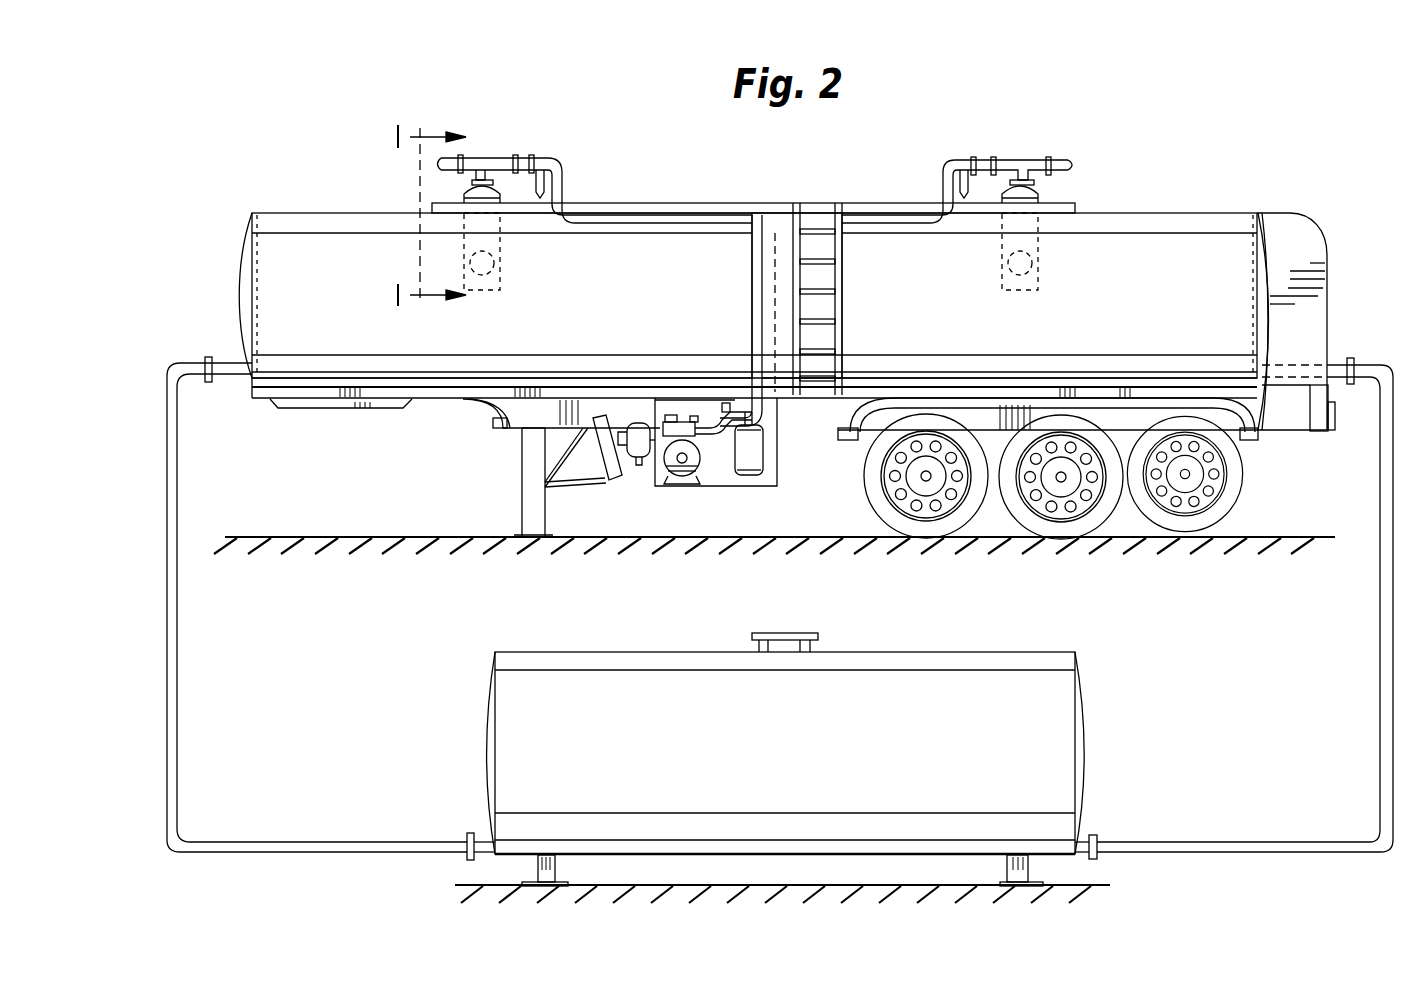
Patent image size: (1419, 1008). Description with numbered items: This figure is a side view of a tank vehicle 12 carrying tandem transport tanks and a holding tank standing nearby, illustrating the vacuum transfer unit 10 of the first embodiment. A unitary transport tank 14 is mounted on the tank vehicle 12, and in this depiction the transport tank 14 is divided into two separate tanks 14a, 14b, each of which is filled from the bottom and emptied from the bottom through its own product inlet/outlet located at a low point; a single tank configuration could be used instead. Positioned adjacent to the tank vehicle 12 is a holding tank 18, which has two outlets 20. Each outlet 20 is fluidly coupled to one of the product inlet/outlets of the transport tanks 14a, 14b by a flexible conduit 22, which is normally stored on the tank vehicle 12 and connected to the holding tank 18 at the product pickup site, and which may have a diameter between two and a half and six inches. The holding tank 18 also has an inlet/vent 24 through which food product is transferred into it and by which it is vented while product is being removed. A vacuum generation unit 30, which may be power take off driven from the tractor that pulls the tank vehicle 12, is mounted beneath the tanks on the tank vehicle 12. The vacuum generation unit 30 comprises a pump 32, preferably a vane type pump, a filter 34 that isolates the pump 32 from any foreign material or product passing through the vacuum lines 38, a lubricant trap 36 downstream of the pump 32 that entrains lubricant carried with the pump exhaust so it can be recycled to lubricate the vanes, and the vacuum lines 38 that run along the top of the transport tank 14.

The vacuum transfer unit 10 is at (508, 146).
The tank vehicle 12 is at (793, 402).
The transport tank 14 is at (770, 200).
The transport tank 14a is at (312, 228).
The transport tank 14b is at (1164, 222).
The holding tank 18 is at (510, 668).
The outlet 20 is at (486, 838).
The flexible conduit 22 is at (175, 720).
The inlet/vent 24 is at (781, 633).
The vacuum generation unit 30 is at (664, 485).
The pump 32 is at (707, 462).
The filter 34 is at (753, 466).
The lubricant trap 36 is at (629, 457).
The vacuum lines 38 is at (670, 218).